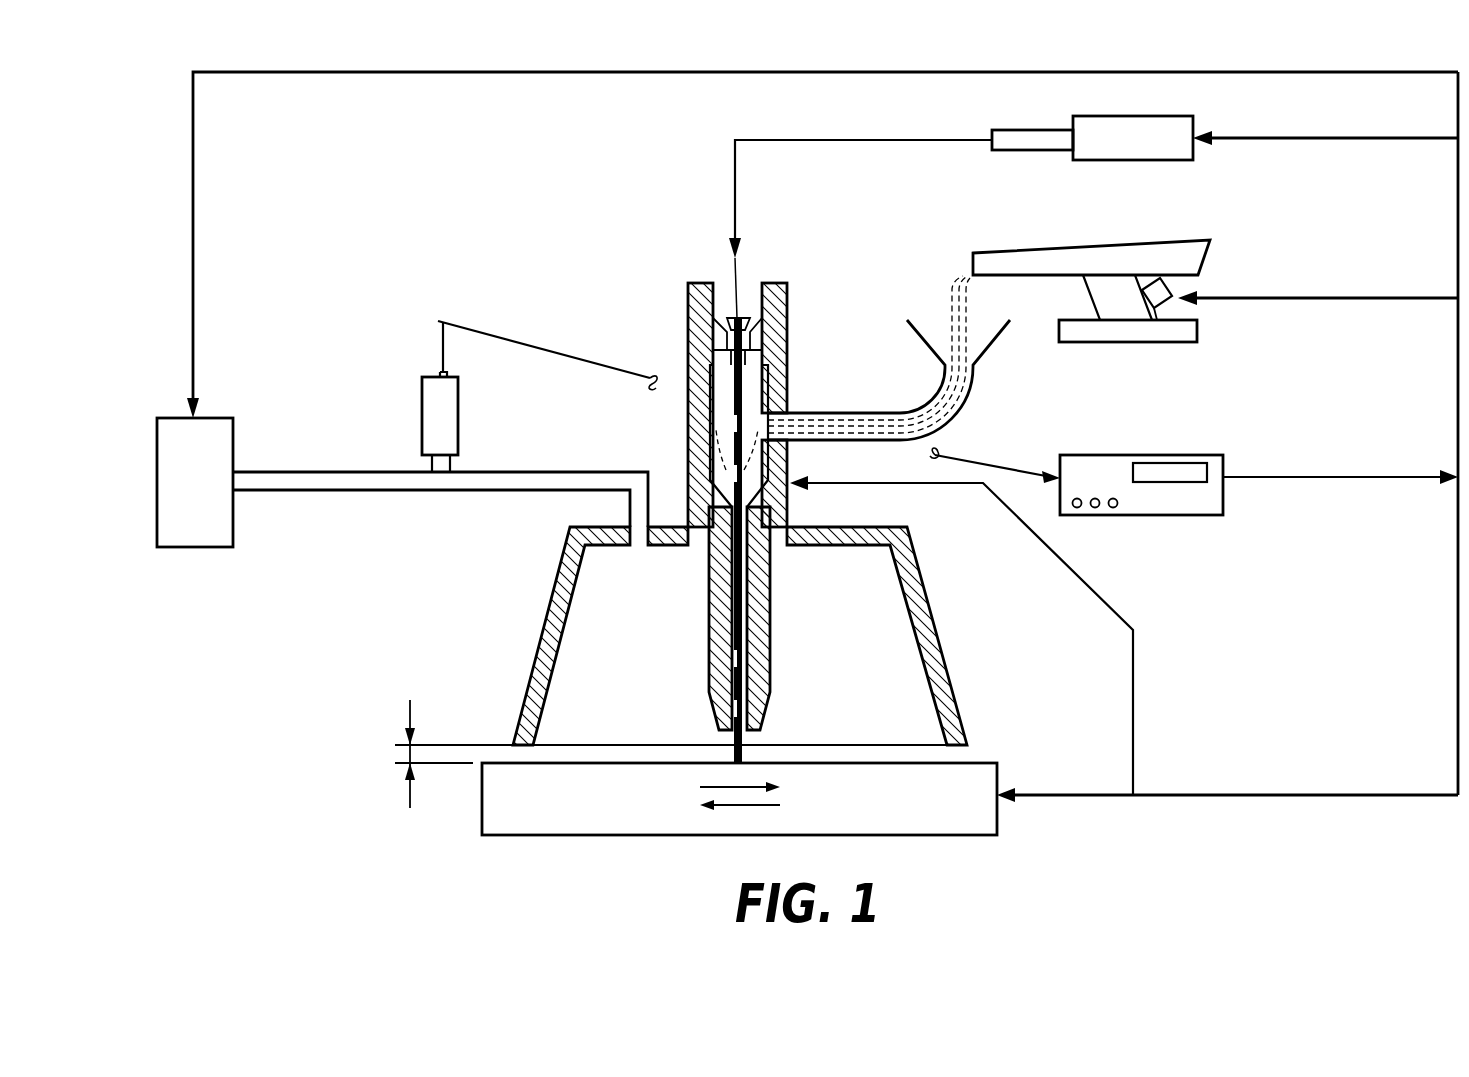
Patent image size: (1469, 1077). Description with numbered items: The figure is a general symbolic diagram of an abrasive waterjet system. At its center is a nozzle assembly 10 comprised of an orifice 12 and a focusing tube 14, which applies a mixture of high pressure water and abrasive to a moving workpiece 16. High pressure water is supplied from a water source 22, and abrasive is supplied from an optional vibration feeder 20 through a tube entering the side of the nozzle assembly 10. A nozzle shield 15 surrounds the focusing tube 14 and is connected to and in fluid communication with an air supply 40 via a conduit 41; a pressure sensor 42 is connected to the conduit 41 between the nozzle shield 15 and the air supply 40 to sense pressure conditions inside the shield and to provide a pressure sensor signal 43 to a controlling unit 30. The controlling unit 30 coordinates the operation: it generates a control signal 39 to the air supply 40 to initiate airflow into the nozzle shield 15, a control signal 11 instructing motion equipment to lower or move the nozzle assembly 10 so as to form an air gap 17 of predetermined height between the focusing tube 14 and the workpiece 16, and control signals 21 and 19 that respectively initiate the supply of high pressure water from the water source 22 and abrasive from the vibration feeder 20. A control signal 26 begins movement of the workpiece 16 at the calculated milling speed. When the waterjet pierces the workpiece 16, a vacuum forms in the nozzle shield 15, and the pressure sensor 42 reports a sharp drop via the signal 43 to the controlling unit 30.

The nozzle assembly 10 is at (668, 426).
The control signal 11 is at (1085, 578).
The orifice 12 is at (721, 322).
The focusing tube 14 is at (772, 620).
The nozzle shield 15 is at (543, 630).
The workpiece 16 is at (583, 838).
The air gap 17 is at (382, 755).
The control signal 19 is at (1360, 298).
The vibration feeder 20 is at (1212, 258).
The control signal 21 is at (1318, 138).
The water source 22 is at (1115, 160).
The control signal 26 is at (1060, 795).
The controlling unit 30 is at (1223, 500).
The control signal 39 is at (388, 72).
The air supply 40 is at (158, 500).
The conduit 41 is at (344, 492).
The pressure sensor 42 is at (422, 408).
The pressure sensor signal 43 is at (535, 346).